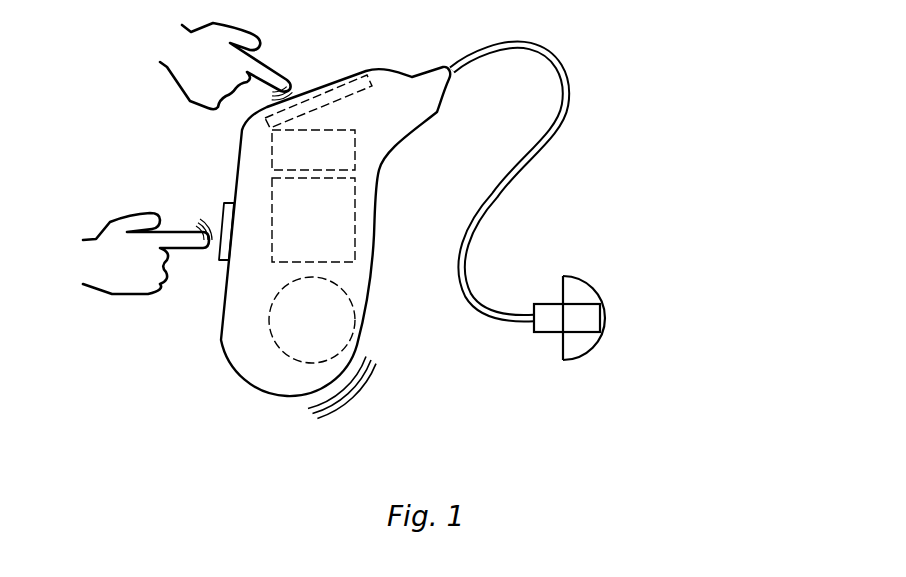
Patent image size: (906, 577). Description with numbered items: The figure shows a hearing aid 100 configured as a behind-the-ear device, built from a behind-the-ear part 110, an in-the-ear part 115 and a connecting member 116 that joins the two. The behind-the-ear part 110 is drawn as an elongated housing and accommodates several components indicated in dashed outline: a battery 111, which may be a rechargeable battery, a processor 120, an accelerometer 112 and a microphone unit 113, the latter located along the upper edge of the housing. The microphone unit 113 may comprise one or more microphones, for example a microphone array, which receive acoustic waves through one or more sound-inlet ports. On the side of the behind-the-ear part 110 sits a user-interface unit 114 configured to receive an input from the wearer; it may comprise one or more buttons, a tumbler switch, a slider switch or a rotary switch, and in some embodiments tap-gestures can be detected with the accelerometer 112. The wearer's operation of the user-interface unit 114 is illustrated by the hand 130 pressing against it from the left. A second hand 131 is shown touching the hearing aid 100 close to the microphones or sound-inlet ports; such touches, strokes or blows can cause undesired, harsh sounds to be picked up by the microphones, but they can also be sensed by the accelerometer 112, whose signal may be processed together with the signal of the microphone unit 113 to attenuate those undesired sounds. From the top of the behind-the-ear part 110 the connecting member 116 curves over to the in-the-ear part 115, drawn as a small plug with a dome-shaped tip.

The hearing aid 100 is at (414, 227).
The behind-the-ear part 110 is at (243, 393).
The battery 111 is at (295, 330).
The accelerometer 112 is at (296, 160).
The microphone unit 113 is at (355, 73).
The user-interface unit 114 is at (225, 210).
The in-the-ear part 115 is at (603, 300).
The connecting member 116 is at (557, 57).
The processor 120 is at (296, 231).
The hand 130 is at (60, 268).
The hand 131 is at (143, 50).